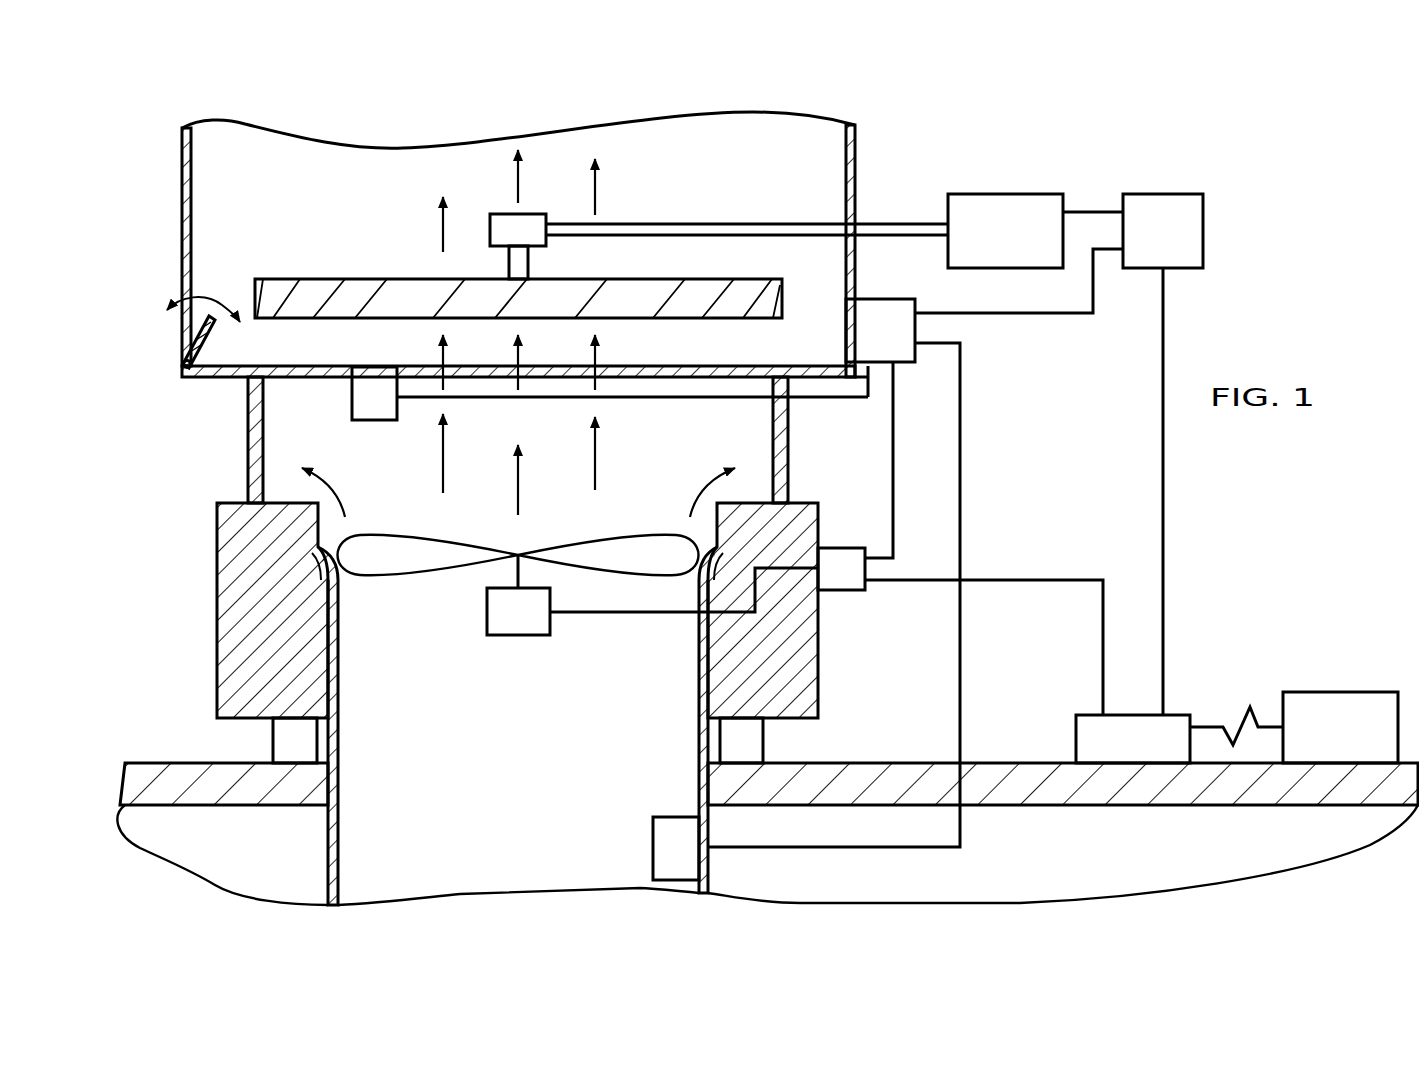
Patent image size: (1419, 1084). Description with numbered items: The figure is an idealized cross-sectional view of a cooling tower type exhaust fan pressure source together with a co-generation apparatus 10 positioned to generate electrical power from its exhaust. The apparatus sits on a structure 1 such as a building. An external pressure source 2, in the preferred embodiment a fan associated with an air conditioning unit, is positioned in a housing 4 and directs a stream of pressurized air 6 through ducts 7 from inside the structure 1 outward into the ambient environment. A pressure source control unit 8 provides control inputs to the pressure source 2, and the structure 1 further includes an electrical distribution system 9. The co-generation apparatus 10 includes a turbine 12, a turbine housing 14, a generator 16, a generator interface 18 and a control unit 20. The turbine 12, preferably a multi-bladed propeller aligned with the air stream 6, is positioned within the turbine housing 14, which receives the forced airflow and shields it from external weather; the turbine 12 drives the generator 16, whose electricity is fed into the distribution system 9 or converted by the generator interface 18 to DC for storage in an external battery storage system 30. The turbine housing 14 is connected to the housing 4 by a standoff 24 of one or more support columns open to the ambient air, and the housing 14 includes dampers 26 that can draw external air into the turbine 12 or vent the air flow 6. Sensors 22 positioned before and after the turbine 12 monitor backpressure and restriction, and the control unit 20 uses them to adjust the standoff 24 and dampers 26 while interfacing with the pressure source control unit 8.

The structure 1 is at (1011, 864).
The pressure source 2 is at (527, 626).
The housing 4 is at (217, 664).
The air stream 6 is at (518, 175).
The ducts 7 is at (328, 843).
The pressure source control unit 8 is at (842, 590).
The electrical distribution system 9 is at (1076, 738).
The co-generation apparatus 10 is at (803, 135).
The turbine 12 is at (235, 275).
The turbine housing 14 is at (182, 200).
The generator 16 is at (1005, 194).
The generator interface 18 is at (1183, 270).
The control unit 20 is at (920, 300).
The sensors 22 is at (375, 422).
The standoff 24 is at (248, 430).
The dampers 26 is at (212, 318).
The external battery storage system 30 is at (1340, 692).